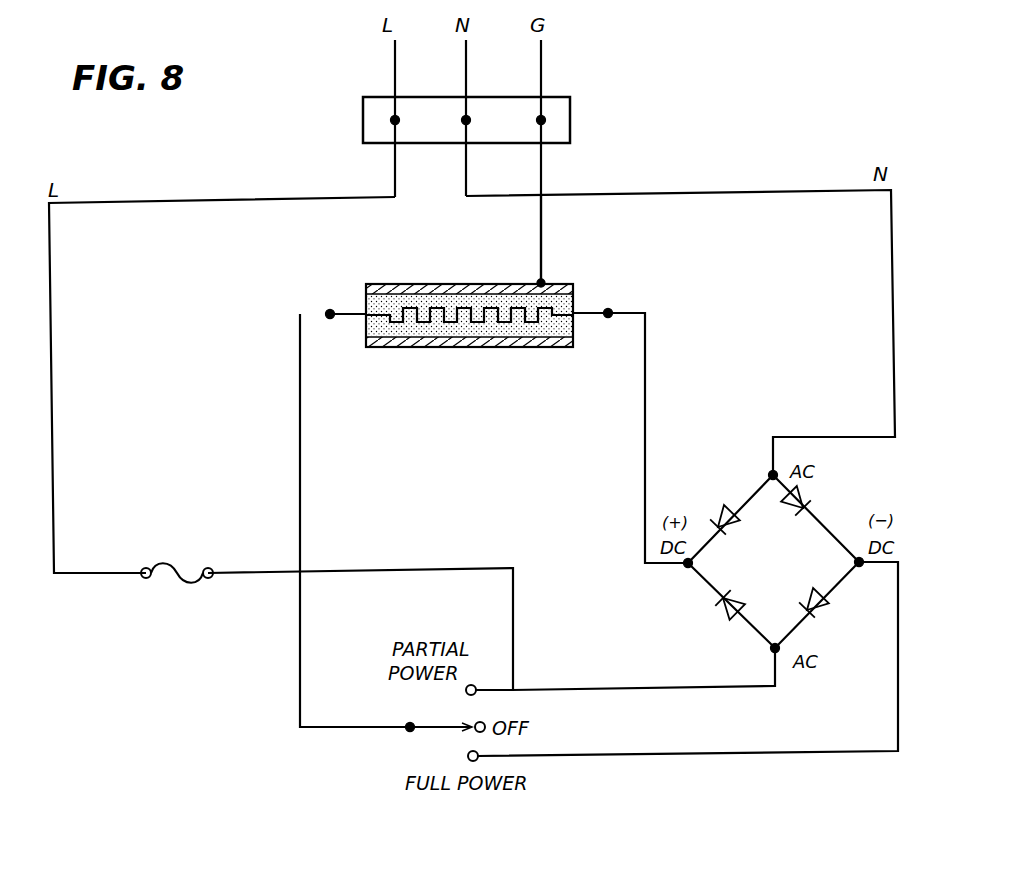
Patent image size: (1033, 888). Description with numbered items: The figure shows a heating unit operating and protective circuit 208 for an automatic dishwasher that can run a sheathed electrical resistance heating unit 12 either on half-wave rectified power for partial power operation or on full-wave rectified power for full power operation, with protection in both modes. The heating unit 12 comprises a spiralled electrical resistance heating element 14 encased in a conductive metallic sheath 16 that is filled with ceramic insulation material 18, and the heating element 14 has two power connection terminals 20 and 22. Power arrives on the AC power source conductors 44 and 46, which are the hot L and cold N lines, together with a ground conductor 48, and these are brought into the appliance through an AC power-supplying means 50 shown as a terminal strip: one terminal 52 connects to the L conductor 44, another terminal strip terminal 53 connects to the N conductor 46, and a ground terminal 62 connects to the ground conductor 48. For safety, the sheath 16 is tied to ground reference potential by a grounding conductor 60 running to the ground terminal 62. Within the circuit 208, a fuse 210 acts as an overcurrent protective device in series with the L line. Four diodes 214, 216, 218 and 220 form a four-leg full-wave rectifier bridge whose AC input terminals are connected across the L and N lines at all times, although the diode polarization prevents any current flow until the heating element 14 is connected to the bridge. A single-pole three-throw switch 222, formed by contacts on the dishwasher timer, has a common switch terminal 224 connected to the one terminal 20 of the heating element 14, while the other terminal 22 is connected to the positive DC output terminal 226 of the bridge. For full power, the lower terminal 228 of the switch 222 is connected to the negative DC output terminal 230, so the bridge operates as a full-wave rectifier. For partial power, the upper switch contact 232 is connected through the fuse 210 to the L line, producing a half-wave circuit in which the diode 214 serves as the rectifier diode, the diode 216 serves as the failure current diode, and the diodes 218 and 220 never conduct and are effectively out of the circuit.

The sheathed electrical resistance heating unit 12 is at (469, 333).
The electrical resistance heating element 14 is at (410, 324).
The conductive metallic sheath 16 is at (541, 348).
The ceramic insulation material 18 is at (422, 300).
The heating element terminal 20 is at (329, 311).
The heating element terminal 22 is at (609, 310).
The AC power source conductor 44 is at (392, 55).
The AC power source conductor 46 is at (464, 54).
The ground conductor 48 is at (539, 52).
The AC power-supplying means 50 is at (570, 118).
The terminal 52 is at (392, 118).
The terminal strip terminal 53 is at (463, 118).
The grounding conductor 60 is at (541, 240).
The ground terminal 62 is at (538, 118).
The heating unit operating and protective circuit 208 is at (176, 636).
The fuse 210 is at (181, 571).
The diode 214 is at (728, 503).
The diode 216 is at (727, 618).
The diode 218 is at (810, 502).
The diode 220 is at (817, 616).
The single-pole three-throw switch 222 is at (362, 774).
The common switch terminal 224 is at (408, 729).
The positive DC output terminal 226 is at (684, 566).
The lower switch terminal 228 is at (468, 756).
The negative DC output terminal 230 is at (860, 566).
The upper switch contact 232 is at (466, 691).